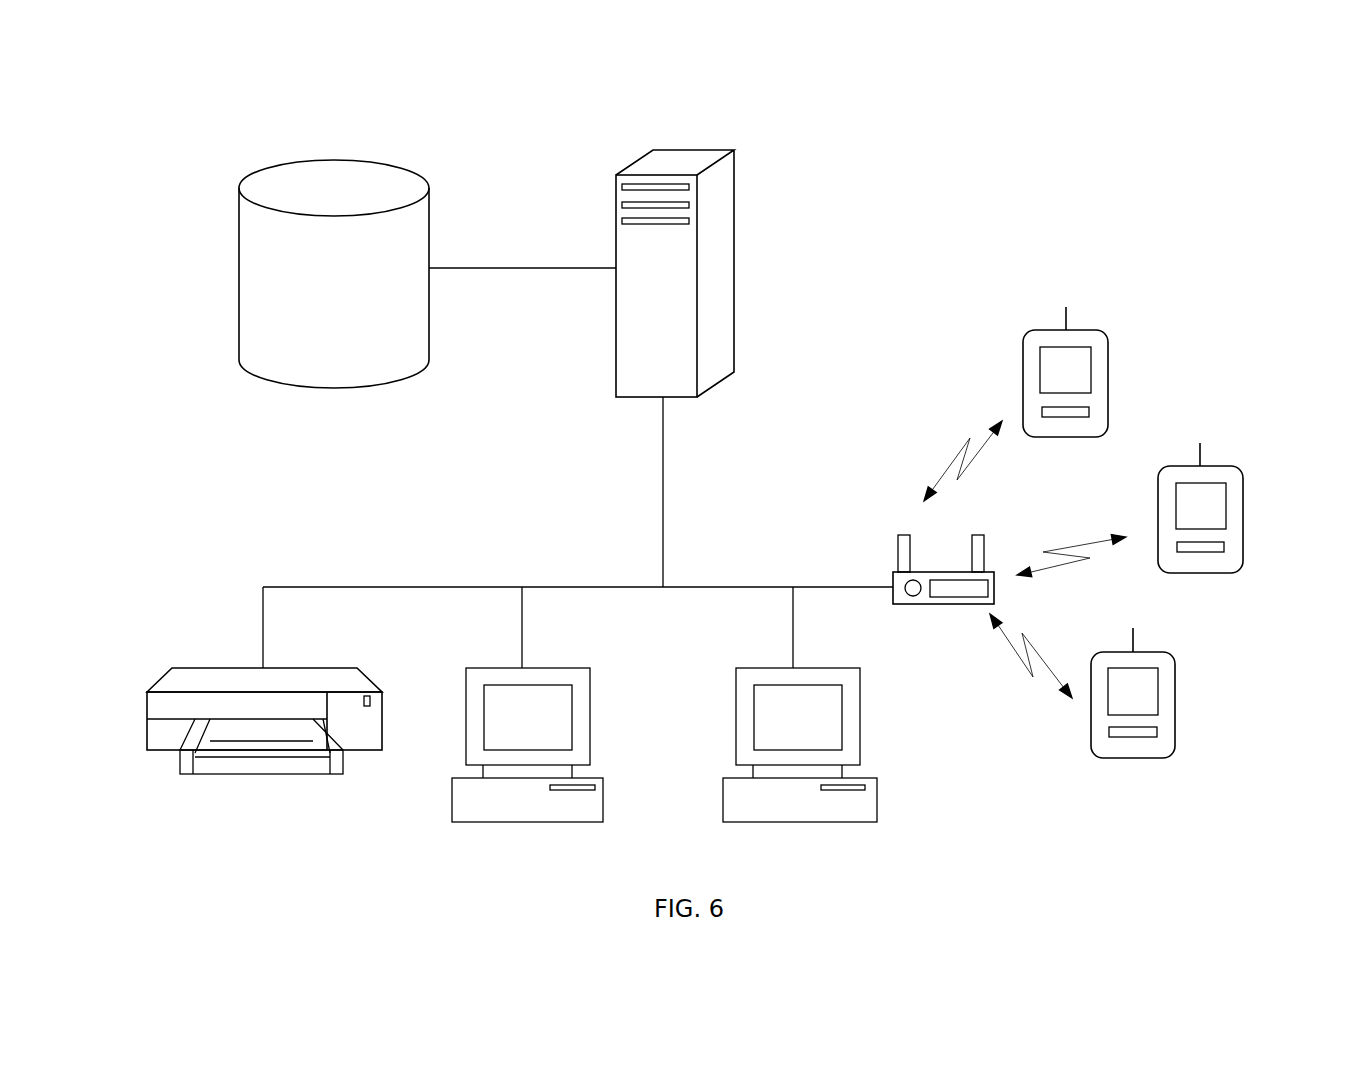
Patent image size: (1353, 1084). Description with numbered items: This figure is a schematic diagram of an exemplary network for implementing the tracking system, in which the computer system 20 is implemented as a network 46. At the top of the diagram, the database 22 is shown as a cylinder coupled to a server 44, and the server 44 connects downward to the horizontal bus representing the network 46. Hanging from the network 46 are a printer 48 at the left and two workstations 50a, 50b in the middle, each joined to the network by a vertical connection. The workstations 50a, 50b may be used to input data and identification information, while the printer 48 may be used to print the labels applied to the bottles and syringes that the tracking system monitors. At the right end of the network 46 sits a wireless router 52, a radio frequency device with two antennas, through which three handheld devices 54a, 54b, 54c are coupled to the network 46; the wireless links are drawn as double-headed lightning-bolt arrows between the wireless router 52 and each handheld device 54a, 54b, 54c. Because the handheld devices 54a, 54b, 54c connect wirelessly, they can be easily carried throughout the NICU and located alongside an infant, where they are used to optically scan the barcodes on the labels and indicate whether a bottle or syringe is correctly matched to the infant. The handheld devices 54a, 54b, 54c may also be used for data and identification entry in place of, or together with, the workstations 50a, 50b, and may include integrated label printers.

The computer system 20 is at (925, 125).
The database 22 is at (347, 160).
The server 44 is at (720, 150).
The network 46 is at (440, 587).
The printer 48 is at (212, 668).
The workstation 50a is at (483, 822).
The workstation 50b is at (820, 822).
The wireless router 52 is at (893, 572).
The handheld device 54a is at (1035, 330).
The handheld device 54b is at (1200, 573).
The handheld device 54c is at (1133, 758).